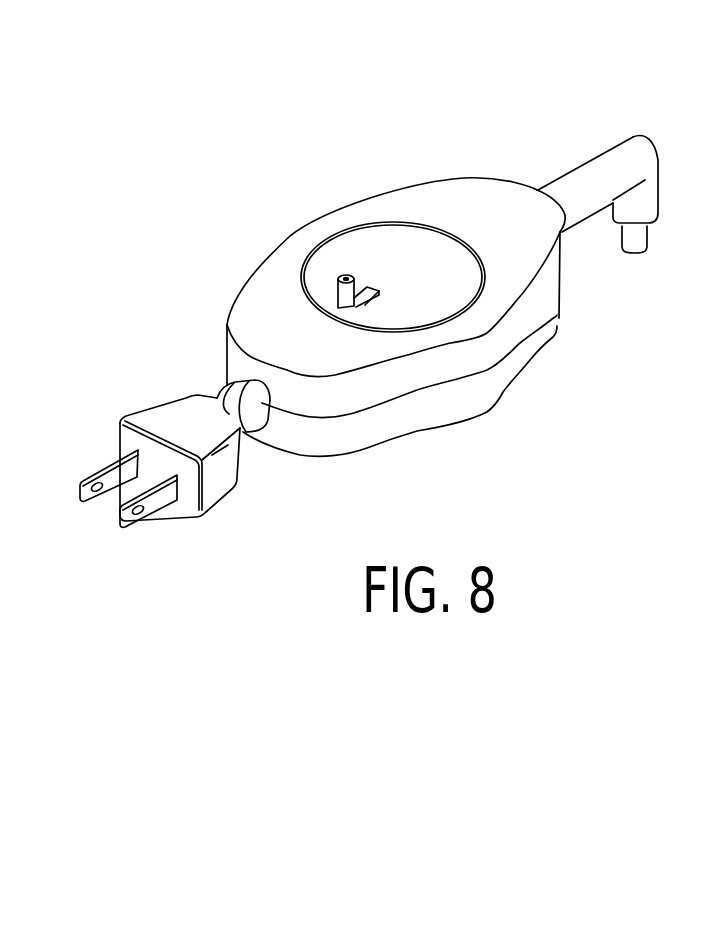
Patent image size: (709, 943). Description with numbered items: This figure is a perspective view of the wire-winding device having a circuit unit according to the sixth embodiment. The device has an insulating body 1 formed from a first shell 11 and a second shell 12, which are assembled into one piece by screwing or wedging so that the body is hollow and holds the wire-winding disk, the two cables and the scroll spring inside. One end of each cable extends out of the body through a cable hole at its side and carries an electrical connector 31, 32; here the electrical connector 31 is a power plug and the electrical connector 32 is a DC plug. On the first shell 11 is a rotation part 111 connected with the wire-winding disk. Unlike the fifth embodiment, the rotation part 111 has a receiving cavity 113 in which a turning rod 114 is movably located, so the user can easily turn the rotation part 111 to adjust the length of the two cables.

The insulating body 1 is at (394, 335).
The first shell 11 is at (396, 250).
The rotation part 111 is at (442, 242).
The receiving cavity 113 is at (367, 287).
The turning rod 114 is at (340, 286).
The second shell 12 is at (503, 393).
The electrical connector 31 is at (212, 497).
The electrical connector 32 is at (643, 152).